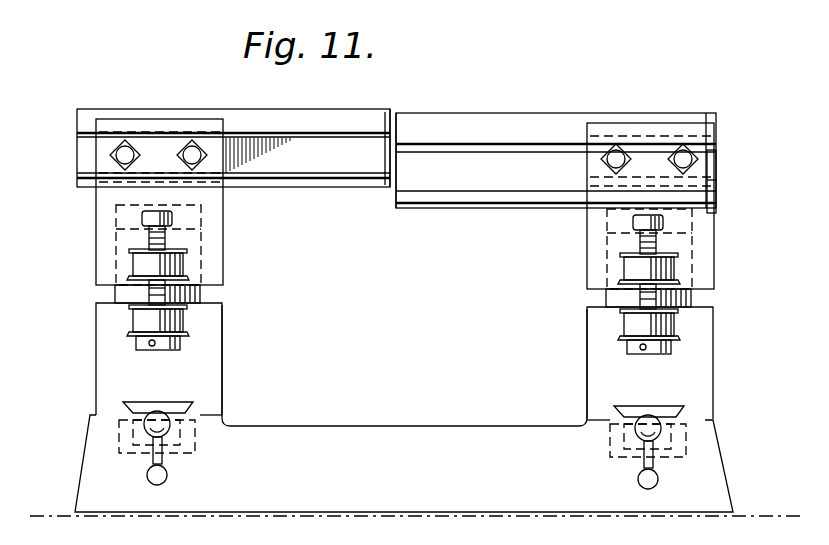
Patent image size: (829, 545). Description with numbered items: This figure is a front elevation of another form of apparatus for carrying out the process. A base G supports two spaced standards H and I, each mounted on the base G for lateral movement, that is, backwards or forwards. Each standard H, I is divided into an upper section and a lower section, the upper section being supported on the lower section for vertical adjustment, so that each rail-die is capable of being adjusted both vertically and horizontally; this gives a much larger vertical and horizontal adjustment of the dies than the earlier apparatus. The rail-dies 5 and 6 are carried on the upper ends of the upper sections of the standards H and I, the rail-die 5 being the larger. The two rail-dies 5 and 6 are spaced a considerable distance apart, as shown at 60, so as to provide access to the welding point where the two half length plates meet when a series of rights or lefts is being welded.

The rail-die 5 is at (441, 123).
The rail-die 6 is at (328, 121).
The space between rail-dies 60 is at (392, 116).
The standard H is at (208, 272).
The standard I is at (600, 277).
The base G is at (400, 440).